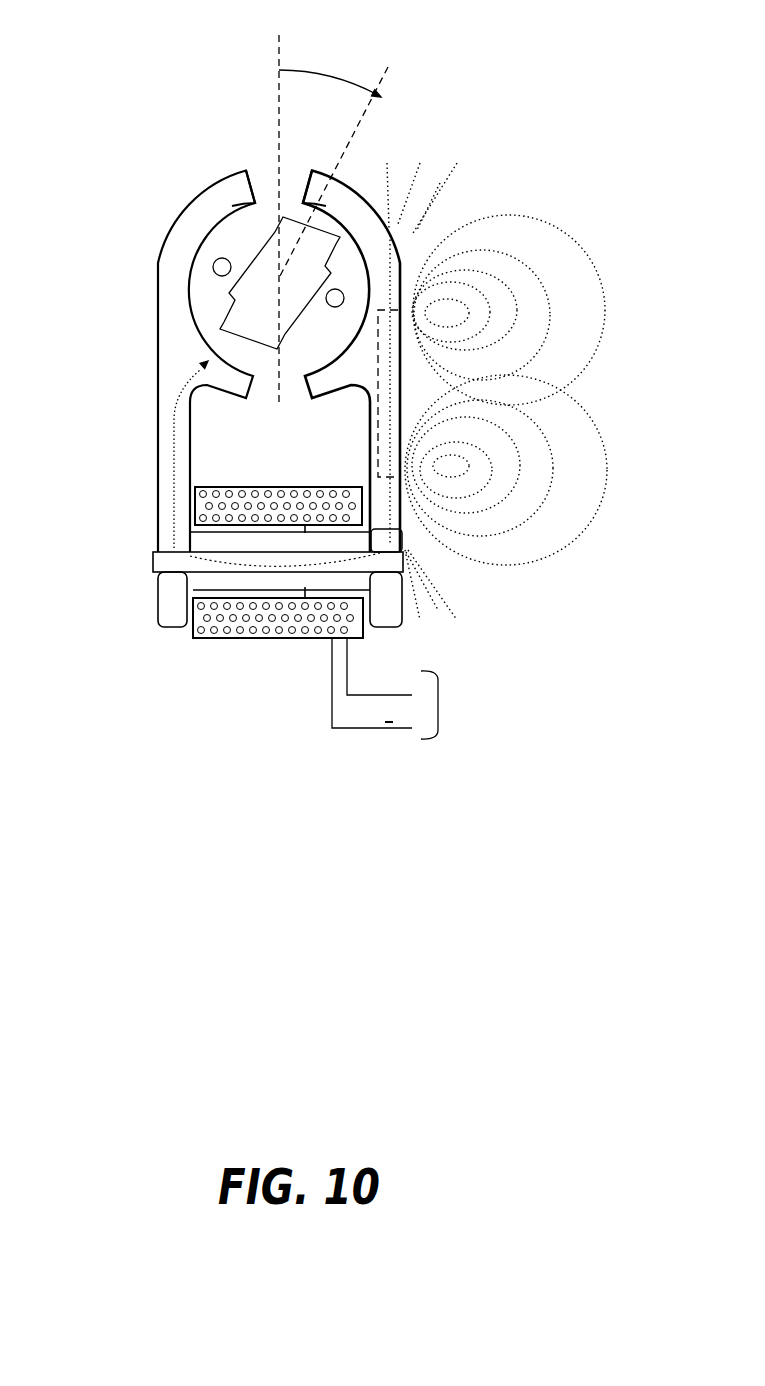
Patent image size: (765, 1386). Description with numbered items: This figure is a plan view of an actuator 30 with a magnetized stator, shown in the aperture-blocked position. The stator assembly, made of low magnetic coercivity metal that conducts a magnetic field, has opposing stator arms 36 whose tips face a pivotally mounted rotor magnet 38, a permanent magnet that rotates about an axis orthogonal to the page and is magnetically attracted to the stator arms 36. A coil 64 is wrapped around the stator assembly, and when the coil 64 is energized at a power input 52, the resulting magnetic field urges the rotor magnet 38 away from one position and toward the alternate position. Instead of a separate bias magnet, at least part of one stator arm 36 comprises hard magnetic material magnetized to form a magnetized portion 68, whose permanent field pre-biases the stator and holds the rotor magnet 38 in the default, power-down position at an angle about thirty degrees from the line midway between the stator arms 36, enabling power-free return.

The actuator 30 is at (79, 384).
The stator arms 36 is at (247, 172).
The rotor magnet 38 is at (250, 240).
The power input 52 is at (440, 700).
The coil 64 is at (193, 637).
The magnetized portion 68 is at (378, 371).